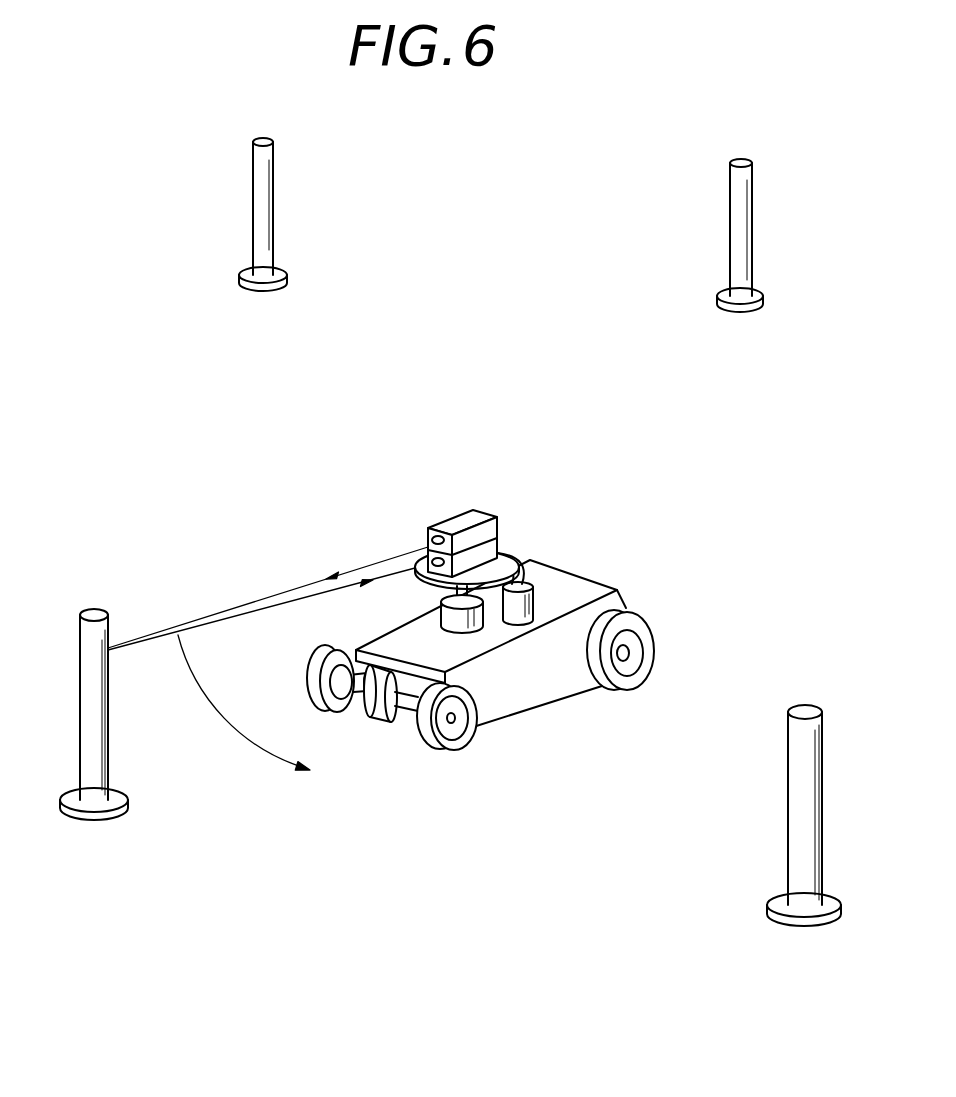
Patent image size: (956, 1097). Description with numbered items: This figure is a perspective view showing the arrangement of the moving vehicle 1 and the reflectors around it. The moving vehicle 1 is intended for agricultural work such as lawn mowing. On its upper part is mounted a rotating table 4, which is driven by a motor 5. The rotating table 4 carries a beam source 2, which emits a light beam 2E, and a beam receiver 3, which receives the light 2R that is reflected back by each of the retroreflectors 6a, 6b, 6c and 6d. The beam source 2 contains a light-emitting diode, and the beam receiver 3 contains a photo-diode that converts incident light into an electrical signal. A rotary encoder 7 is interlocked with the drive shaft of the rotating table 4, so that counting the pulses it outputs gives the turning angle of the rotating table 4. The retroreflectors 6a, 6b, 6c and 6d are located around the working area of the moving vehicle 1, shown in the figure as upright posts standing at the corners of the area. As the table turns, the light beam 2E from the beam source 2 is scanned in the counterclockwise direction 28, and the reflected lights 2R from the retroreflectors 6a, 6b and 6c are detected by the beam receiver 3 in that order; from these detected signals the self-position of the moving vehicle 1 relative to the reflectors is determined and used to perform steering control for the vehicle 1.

The moving vehicle 1 is at (542, 697).
The beam source 2 is at (453, 518).
The beam receiver 3 is at (497, 552).
The rotating table 4 is at (510, 562).
The motor 5 is at (533, 600).
The rotary encoder 7 is at (443, 614).
The retroreflector 6a is at (273, 181).
The retroreflector 6b is at (108, 737).
The retroreflector 6c is at (788, 770).
The retroreflector 6d is at (752, 244).
The light beam 2E is at (248, 603).
The reflected light 2R is at (240, 616).
The counterclockwise direction 28 is at (257, 745).